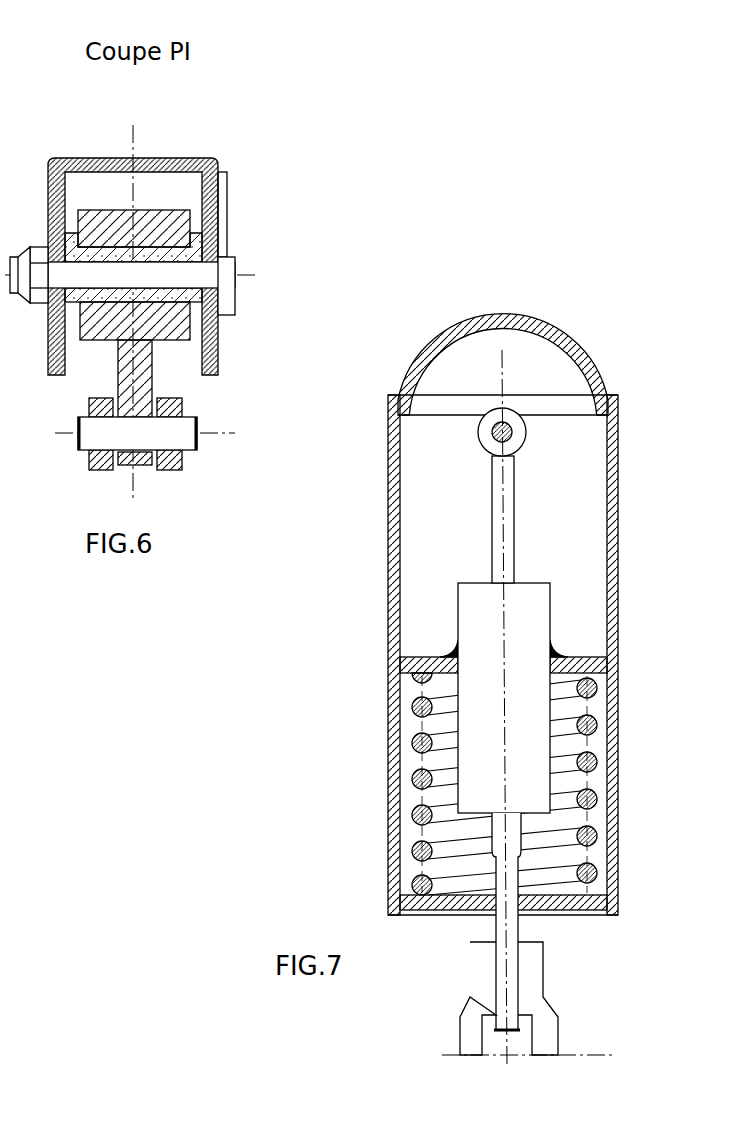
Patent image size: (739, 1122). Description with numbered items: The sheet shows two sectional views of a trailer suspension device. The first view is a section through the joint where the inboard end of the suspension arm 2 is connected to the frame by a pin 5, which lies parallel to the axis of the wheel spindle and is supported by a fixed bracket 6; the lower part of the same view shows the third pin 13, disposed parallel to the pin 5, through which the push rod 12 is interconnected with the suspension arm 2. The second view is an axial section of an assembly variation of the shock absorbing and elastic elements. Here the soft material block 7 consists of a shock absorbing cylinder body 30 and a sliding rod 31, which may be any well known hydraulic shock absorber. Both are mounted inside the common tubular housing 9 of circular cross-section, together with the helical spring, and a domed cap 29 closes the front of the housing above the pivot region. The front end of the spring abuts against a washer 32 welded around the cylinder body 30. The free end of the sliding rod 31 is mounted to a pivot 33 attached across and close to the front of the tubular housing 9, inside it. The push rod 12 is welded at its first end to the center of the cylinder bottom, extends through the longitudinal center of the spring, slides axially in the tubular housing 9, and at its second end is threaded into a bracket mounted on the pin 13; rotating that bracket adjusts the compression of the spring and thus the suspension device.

In FIG. 6, the suspension arm 2 is at (173, 182).
In FIG. 6, the pin 5 is at (208, 285).
In FIG. 6, the fixed bracket 6 is at (83, 157).
In FIG. 6, the third pin 13 is at (177, 426).
In FIG. 7, the soft material block 7 is at (562, 535).
In FIG. 7, the tubular housing 9 is at (393, 513).
In FIG. 7, the push rod 12 is at (512, 927).
In FIG. 7, the dome cap 29 is at (413, 357).
In FIG. 7, the shock absorbing cylinder body 30 is at (535, 597).
In FIG. 7, the sliding rod 31 is at (503, 493).
In FIG. 7, the washer 32 is at (597, 663).
In FIG. 7, the pivot 33 is at (428, 432).